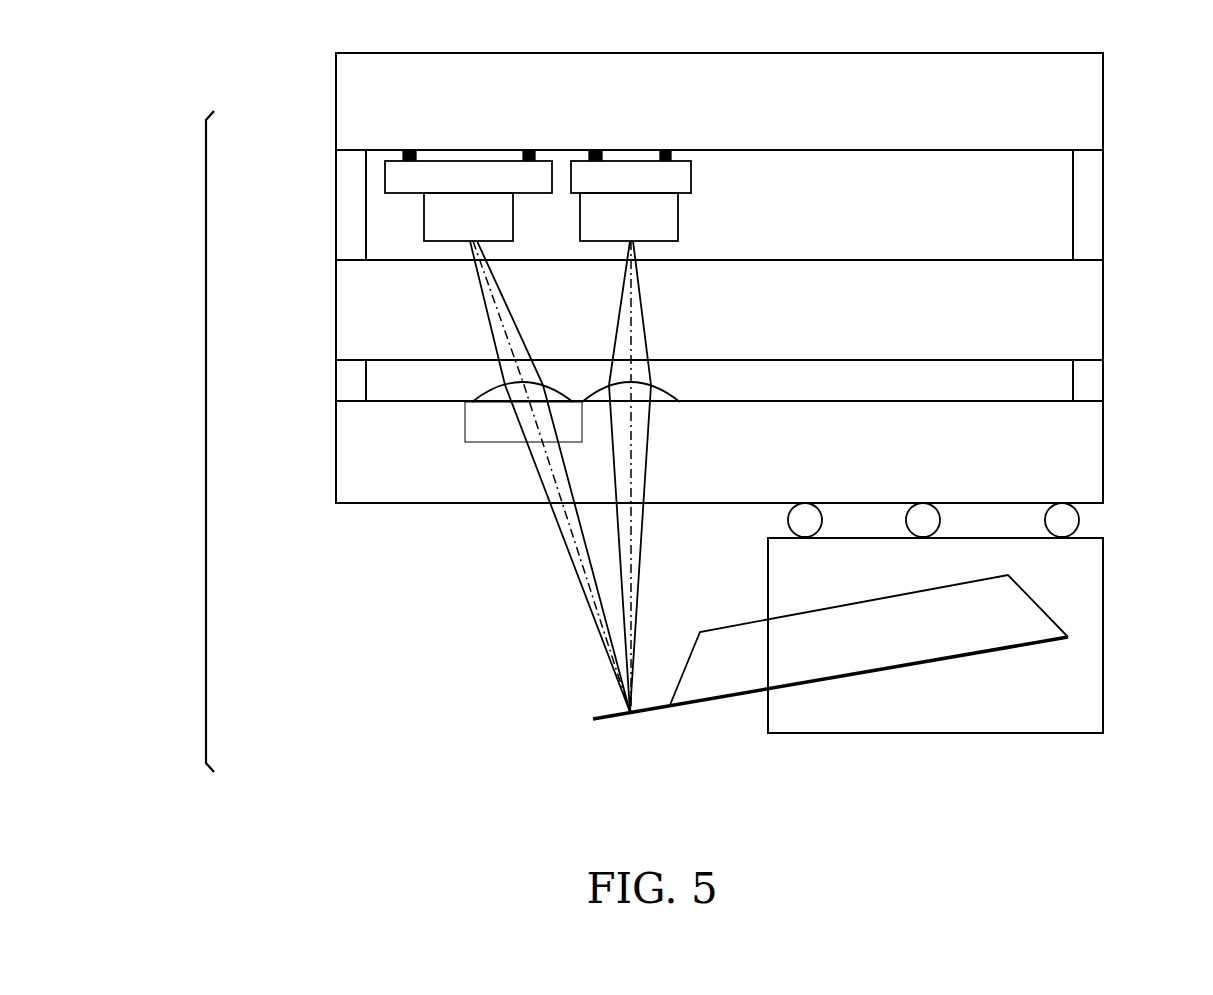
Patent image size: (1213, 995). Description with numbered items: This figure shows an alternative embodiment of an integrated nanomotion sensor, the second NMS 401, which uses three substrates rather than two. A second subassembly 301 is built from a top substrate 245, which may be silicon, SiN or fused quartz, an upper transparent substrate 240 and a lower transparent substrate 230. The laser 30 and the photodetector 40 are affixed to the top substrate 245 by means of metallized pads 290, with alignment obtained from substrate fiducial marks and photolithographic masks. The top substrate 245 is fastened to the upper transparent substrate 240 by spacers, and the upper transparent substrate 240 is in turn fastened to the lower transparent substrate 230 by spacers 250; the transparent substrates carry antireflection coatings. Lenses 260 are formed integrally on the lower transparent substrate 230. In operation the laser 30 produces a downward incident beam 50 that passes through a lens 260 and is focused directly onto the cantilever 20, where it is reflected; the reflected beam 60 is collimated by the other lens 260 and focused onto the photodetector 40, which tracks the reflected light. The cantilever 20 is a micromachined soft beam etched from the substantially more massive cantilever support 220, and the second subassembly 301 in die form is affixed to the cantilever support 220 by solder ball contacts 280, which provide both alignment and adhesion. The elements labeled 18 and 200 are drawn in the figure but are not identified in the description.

The second subassembly 301 is at (897, 120).
The top substrate 245 is at (1083, 142).
The spacers 250 is at (357, 222).
The upper transparent substrate 240 is at (1075, 283).
The lower transparent substrate 230 is at (1080, 465).
The photodetector 40 is at (463, 202).
The electrical leads 18 is at (538, 175).
The metallized pads 290 is at (667, 150).
The laser 30 is at (647, 213).
The reflected beam 60 is at (533, 488).
The incident beam 50 is at (630, 313).
The lenses 260 is at (488, 402).
The solder ball contacts 280 is at (1073, 523).
The cantilever support 220 is at (900, 720).
The sheet 200 is at (757, 672).
The cantilever 20 is at (610, 725).
The second NMS 401 is at (205, 471).